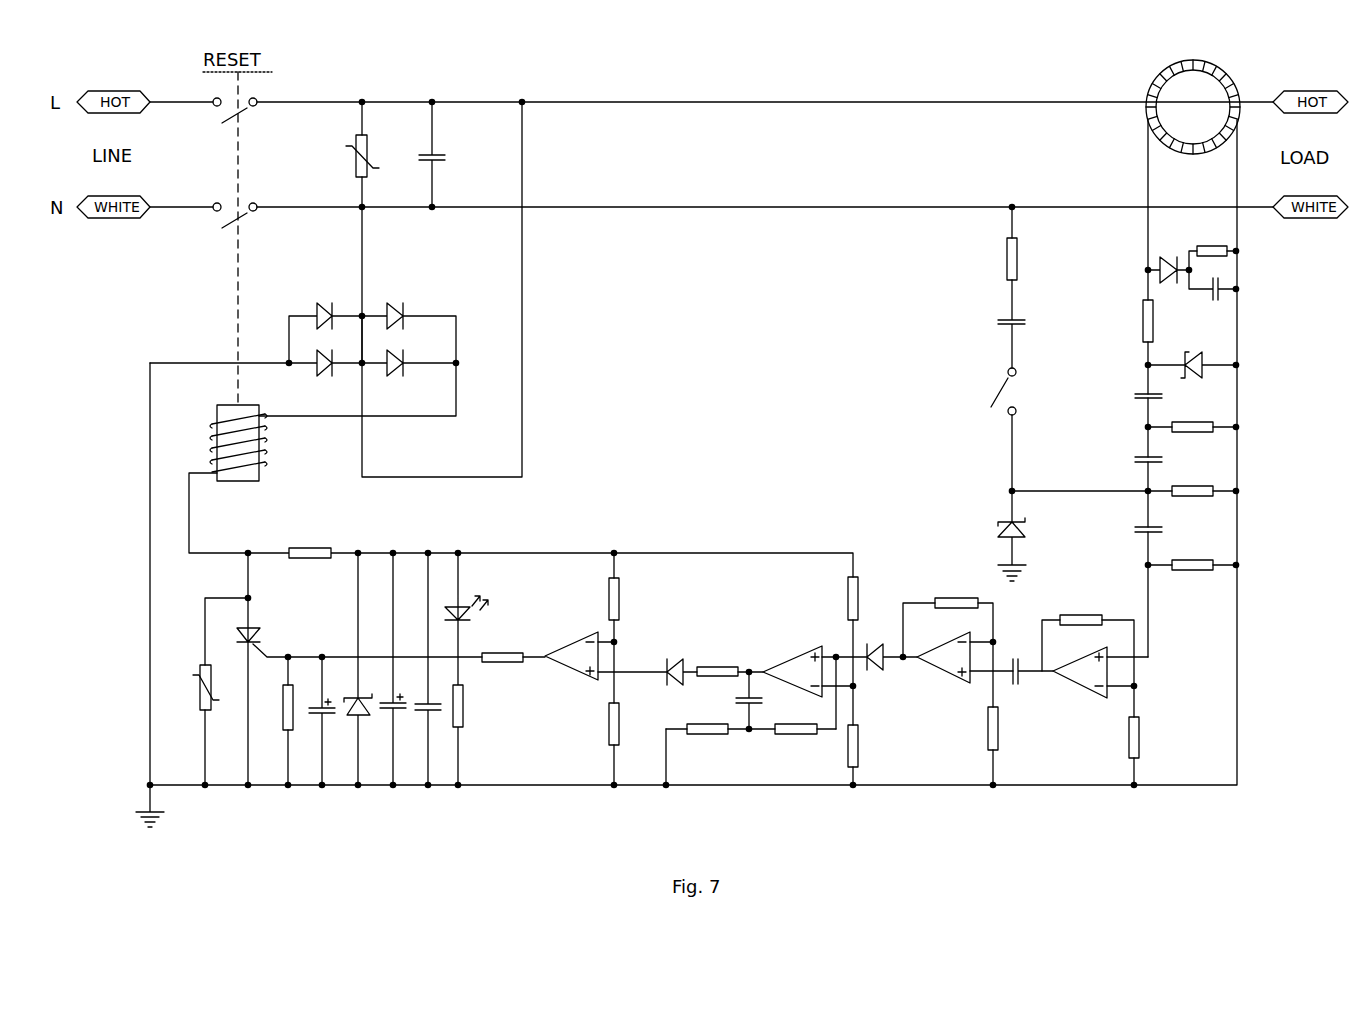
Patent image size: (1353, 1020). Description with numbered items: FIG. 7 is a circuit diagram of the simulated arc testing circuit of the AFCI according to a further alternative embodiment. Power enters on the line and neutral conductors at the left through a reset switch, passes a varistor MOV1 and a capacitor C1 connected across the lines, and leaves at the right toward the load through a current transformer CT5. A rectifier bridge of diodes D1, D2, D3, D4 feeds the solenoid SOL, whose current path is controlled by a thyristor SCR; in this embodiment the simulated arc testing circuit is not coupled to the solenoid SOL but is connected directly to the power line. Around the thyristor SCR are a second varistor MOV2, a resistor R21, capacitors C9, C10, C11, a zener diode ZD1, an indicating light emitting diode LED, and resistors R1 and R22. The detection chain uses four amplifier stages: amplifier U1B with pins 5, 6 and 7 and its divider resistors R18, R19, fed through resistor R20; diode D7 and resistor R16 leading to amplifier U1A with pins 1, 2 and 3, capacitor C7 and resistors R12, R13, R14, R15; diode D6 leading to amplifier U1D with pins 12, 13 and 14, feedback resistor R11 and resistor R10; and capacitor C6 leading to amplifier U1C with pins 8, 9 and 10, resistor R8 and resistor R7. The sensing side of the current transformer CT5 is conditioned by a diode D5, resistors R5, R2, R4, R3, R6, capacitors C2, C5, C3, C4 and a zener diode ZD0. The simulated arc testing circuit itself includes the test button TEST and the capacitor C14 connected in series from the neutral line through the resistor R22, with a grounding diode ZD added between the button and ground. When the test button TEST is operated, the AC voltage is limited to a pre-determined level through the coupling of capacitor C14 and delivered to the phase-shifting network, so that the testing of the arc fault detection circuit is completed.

The metal oxide varistor MOV1 is at (386, 155).
The capacitor C1 is at (439, 155).
The diode D1 is at (397, 305).
The diode D2 is at (397, 380).
The diode D3 is at (325, 380).
The diode D4 is at (325, 305).
The solenoid SOL is at (521, 491).
The resistor R1 is at (310, 541).
The silicon controlled rectifier SCR is at (359, 669).
The metal oxide varistor MOV2 is at (206, 691).
The resistor R21 is at (298, 721).
The capacitor C9 is at (328, 721).
The zener diode ZD1 is at (363, 669).
The capacitor C10 is at (399, 669).
The capacitor C11 is at (434, 669).
The light emitting diode LED is at (471, 669).
The resistor R22 is at (757, 467).
The resistor R20 is at (513, 645).
The operational amplifier U1B is at (571, 656).
The resistor R18 is at (633, 597).
The resistor R19 is at (633, 713).
The diode D7 is at (673, 660).
The resistor R16 is at (730, 654).
The capacitor C7 is at (732, 700).
The operational amplifier U1A is at (792, 671).
The resistor R13 is at (707, 743).
The resistor R12 is at (792, 743).
The resistor R14 is at (830, 631).
The resistor R15 is at (873, 735).
The diode D6 is at (889, 643).
The resistor R11 is at (948, 642).
The operational amplifier U1D is at (943, 657).
The resistor R10 is at (1015, 746).
The capacitor C6 is at (1029, 659).
The resistor R8 is at (1088, 637).
The operational amplifier U1C is at (1080, 672).
The resistor R7 is at (1148, 735).
The diode D5 is at (1168, 256).
The resistor R5 is at (1212, 246).
The capacitor C2 is at (1212, 299).
The resistor R2 is at (1129, 321).
The zener diode ZD0 is at (1192, 378).
The capacitor C5 is at (1133, 397).
The limiting resistor R4 is at (1192, 439).
The capacitor C3 is at (1133, 459).
The resistor R3 is at (1124, 502).
The capacitor C4 is at (1133, 530).
The resistor R6 is at (1192, 577).
The capacitor C14 is at (1049, 322).
The test button TEST is at (969, 445).
The grounding diode ZD is at (1030, 549).
The current transformer CT5 is at (1193, 107).
The op-amp pin 1 is at (757, 661).
The op-amp pin 2 is at (837, 698).
The op-amp pin 3 is at (844, 648).
The op-amp pin 5 is at (632, 683).
The op-amp pin 6 is at (606, 633).
The phase-shifting network circuit 7 is at (533, 643).
The op-amp pin 8 is at (1050, 686).
The op-amp pin 9 is at (1120, 696).
The op-amp pin 10 is at (1127, 649).
The op-amp pin 12 is at (991, 683).
The op-amp pin 13 is at (981, 635).
The op-amp pin 14 is at (904, 672).